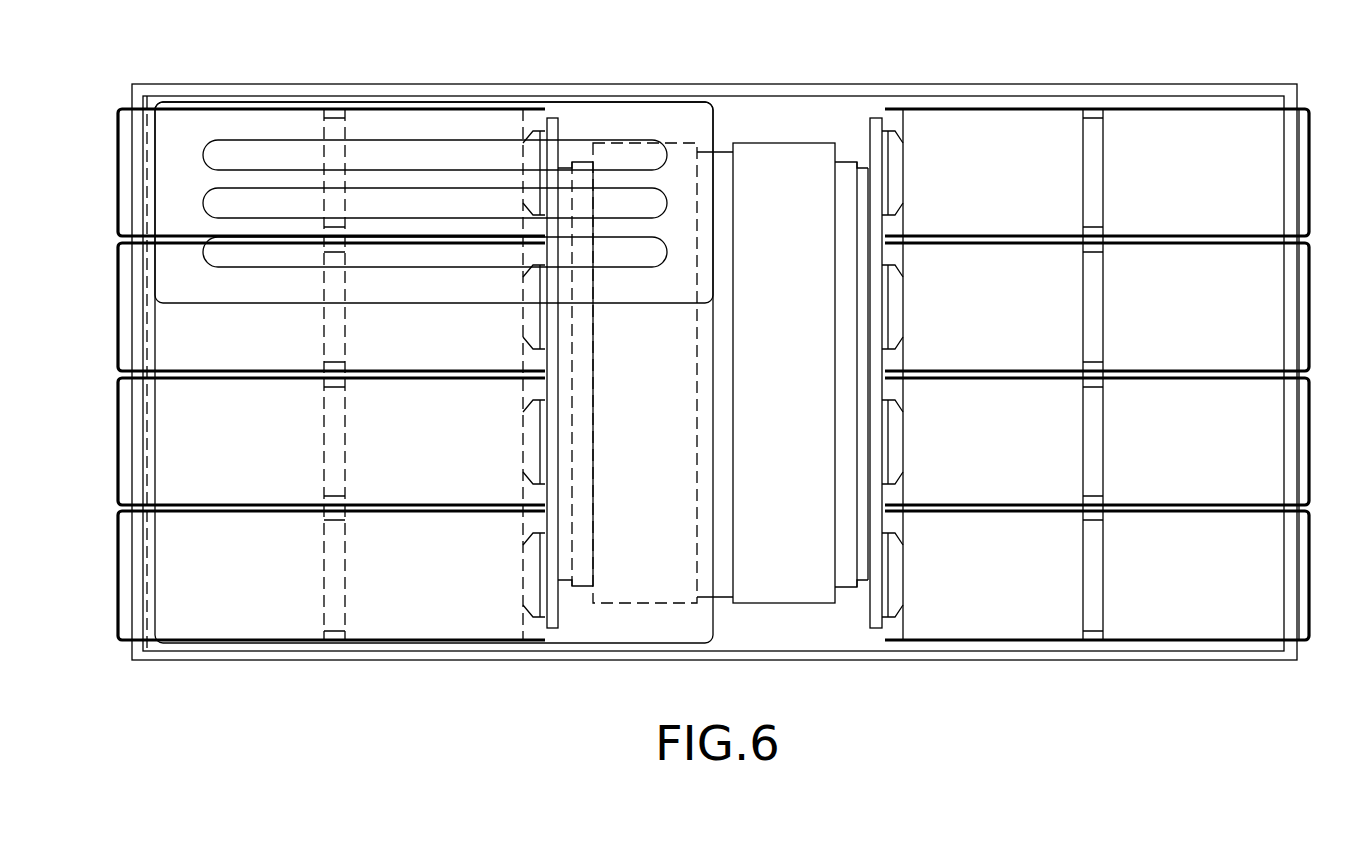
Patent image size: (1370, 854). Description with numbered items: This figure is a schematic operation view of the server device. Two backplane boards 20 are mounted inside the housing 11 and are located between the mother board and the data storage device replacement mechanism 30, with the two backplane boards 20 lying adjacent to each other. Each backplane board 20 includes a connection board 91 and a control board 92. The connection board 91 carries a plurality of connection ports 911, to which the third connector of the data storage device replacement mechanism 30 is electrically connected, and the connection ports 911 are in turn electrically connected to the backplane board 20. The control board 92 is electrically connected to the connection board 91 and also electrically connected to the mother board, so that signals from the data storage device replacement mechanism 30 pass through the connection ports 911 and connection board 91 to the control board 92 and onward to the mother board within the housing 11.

The housing 11 is at (580, 85).
The backplane board 20 is at (574, 316).
The data storage device replacement mechanism 30 is at (113, 168).
The connection board 91 is at (873, 138).
The connection port 911 is at (903, 148).
The control board 92 is at (758, 160).